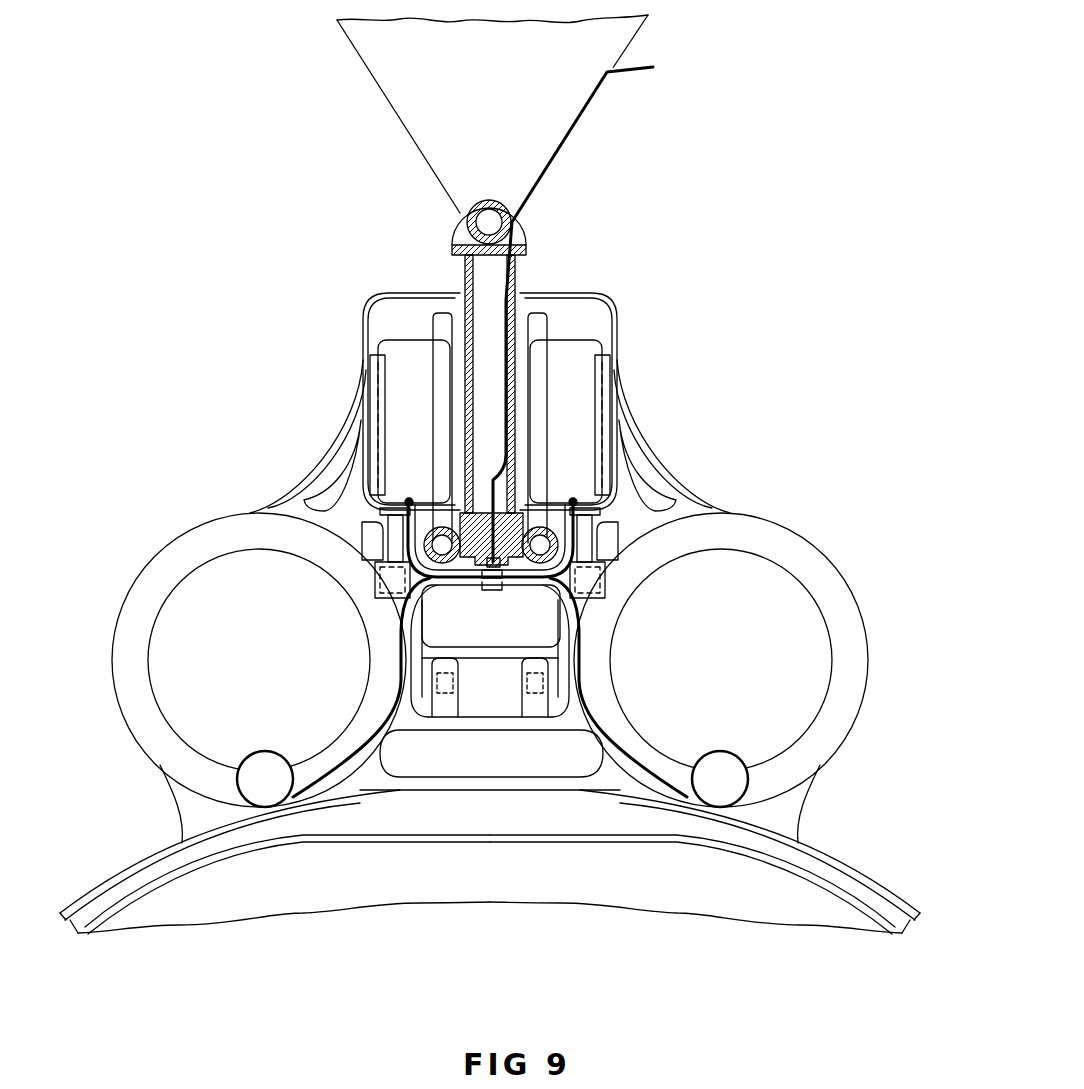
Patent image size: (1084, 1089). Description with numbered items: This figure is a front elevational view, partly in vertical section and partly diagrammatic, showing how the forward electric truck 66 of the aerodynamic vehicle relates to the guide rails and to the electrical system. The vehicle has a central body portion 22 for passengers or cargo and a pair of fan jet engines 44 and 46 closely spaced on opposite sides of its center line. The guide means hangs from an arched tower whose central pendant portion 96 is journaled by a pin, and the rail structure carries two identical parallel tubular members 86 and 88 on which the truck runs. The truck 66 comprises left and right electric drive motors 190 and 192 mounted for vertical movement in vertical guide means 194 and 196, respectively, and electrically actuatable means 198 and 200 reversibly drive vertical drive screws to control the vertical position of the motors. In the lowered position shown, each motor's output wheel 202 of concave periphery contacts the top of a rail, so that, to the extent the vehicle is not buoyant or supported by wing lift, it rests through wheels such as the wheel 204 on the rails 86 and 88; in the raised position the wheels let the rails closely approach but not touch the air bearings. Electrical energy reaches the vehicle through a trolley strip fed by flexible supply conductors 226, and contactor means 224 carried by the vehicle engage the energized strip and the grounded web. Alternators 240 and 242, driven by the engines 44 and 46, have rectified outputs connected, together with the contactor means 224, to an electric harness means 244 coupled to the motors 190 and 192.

The central body portion 22 is at (838, 855).
The fan jet engine 44 is at (783, 524).
The fan jet engine 46 is at (197, 528).
The forward electric truck 66 is at (595, 293).
The tubular member 86 is at (409, 502).
The tubular member 88 is at (545, 528).
The central pendant portion 96 is at (393, 108).
The left electric drive motor 190 is at (590, 355).
The right electric drive motor 192 is at (403, 363).
The vertical guide means 194 is at (608, 380).
The vertical guide means 196 is at (375, 375).
The vertical position controlling means 198 is at (592, 570).
The vertical position controlling means 200 is at (385, 575).
The output wheel 202 is at (543, 330).
The wheel 204 is at (437, 337).
The contactor means 224 is at (488, 593).
The supply conductor 226 is at (633, 63).
The alternator 240 is at (720, 793).
The alternator 242 is at (268, 795).
The electric harness means 244 is at (458, 590).